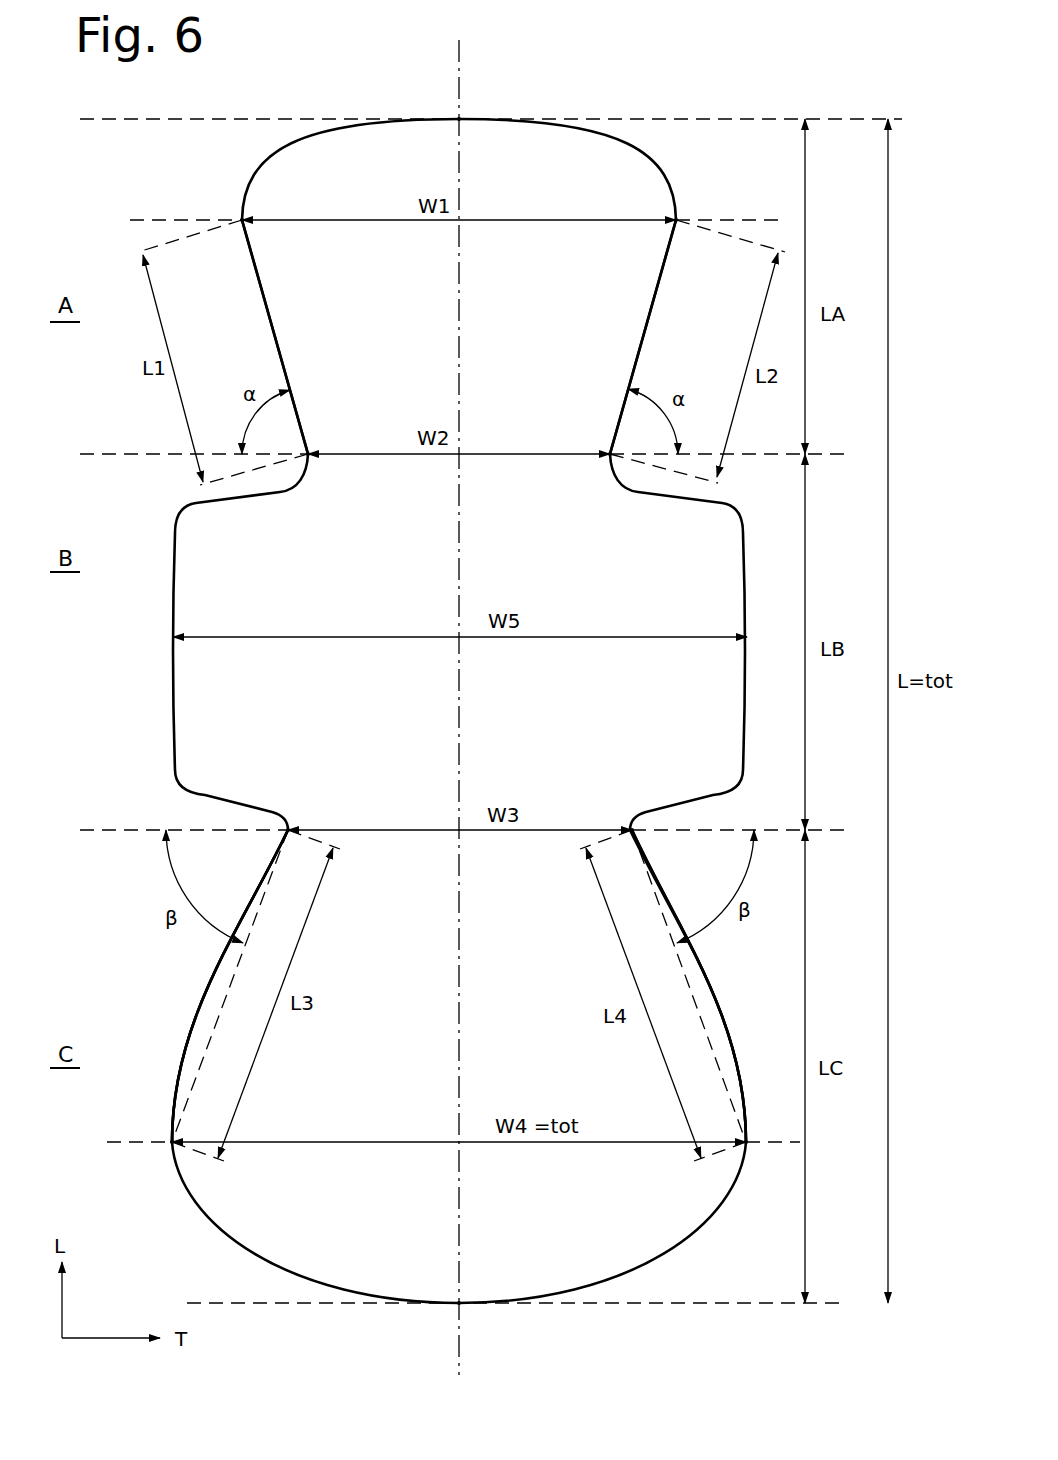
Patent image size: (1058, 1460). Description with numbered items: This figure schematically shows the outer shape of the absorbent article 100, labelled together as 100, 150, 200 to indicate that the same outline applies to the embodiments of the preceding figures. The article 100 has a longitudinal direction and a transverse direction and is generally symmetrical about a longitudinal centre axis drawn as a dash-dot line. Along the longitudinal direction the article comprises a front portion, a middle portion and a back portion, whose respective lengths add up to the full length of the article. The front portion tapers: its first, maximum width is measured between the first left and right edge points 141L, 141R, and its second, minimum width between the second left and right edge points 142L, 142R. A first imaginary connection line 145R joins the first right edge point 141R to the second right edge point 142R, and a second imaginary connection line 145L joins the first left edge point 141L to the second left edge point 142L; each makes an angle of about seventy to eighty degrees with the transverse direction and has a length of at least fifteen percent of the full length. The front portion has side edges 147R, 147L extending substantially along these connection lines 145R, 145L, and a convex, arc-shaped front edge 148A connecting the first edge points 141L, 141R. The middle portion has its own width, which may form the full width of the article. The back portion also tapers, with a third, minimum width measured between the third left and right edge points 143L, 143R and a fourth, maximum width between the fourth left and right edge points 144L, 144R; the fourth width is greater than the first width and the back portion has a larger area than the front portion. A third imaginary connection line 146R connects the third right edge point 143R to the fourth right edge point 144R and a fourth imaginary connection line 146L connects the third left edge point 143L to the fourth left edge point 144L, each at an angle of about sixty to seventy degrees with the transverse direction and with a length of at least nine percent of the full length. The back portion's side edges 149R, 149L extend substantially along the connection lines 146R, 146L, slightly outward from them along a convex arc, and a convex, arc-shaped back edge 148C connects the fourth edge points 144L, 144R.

The article 100 is at (473, 679).
The absorbent core 150 is at (473, 679).
The topsheet 200 is at (605, 95).
The first left edge point 141L is at (242, 220).
The first right edge point 141R is at (676, 220).
The second left edge point 142L is at (308, 454).
The second right edge point 142R is at (610, 454).
The third left edge point 143L is at (288, 830).
The third right edge point 143R is at (632, 830).
The fourth left edge point 144L is at (172, 1142).
The fourth right edge point 144R is at (746, 1142).
The second imaginary connection line 145L is at (251, 243).
The first imaginary connection line 145R is at (639, 360).
The fourth imaginary connection line 146L is at (212, 988).
The third imaginary connection line 146R is at (709, 1034).
The side edge of front portion 147L is at (262, 284).
The side edge of front portion 147R is at (628, 396).
The front edge 148A is at (460, 119).
The back edge 148C is at (460, 1303).
The side edge of back portion 149L is at (186, 1043).
The side edge of back portion 149R is at (705, 969).